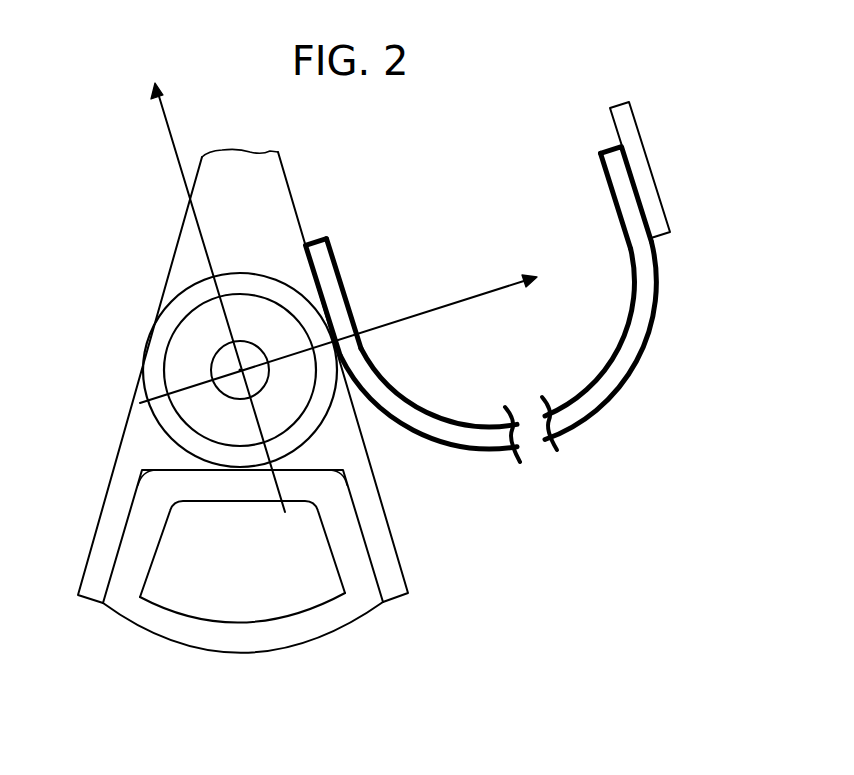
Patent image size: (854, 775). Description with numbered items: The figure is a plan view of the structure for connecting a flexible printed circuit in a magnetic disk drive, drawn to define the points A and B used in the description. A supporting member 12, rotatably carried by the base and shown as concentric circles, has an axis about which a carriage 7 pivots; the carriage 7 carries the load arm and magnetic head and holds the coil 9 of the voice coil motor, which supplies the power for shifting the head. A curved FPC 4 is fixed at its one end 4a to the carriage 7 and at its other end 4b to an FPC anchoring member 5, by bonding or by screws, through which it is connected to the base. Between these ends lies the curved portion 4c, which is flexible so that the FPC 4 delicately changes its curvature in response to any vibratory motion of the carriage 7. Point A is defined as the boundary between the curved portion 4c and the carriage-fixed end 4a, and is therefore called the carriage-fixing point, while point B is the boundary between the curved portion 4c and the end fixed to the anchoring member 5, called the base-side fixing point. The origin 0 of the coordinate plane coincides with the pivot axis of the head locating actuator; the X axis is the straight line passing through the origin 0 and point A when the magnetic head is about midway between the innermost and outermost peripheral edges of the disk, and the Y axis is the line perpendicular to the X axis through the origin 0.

The curved FPC 4 is at (501, 338).
The one end of the FPC 4a is at (337, 267).
The other end of the FPC 4b is at (618, 192).
The curved portion of the FPC 4c is at (485, 450).
The FPC anchoring member 5 is at (633, 153).
The carriage 7 is at (343, 452).
The coil 9 is at (352, 562).
The supporting member 12 is at (180, 367).
The origin 0 is at (238, 368).
The point A is at (355, 330).
The point B is at (617, 245).
The X axis X is at (344, 339).
The Y axis Y is at (206, 291).